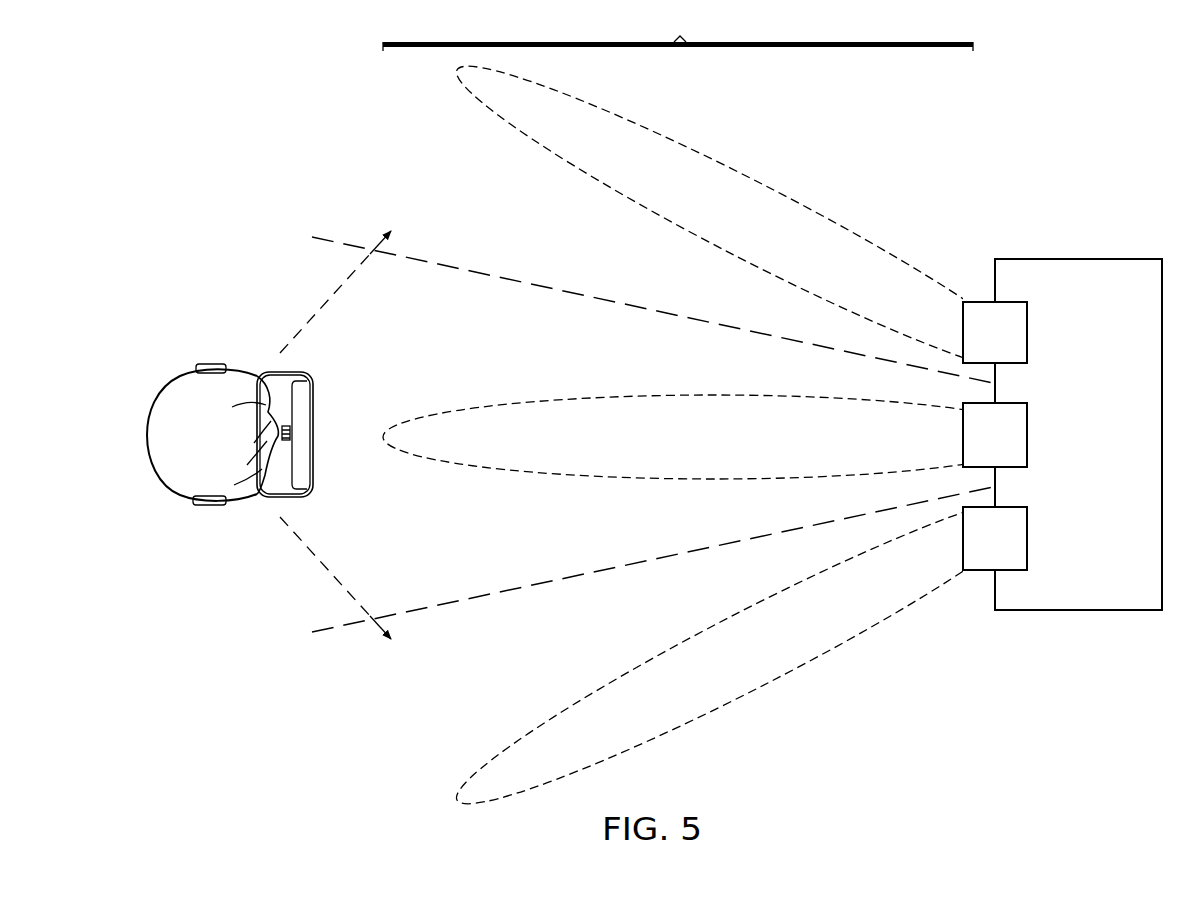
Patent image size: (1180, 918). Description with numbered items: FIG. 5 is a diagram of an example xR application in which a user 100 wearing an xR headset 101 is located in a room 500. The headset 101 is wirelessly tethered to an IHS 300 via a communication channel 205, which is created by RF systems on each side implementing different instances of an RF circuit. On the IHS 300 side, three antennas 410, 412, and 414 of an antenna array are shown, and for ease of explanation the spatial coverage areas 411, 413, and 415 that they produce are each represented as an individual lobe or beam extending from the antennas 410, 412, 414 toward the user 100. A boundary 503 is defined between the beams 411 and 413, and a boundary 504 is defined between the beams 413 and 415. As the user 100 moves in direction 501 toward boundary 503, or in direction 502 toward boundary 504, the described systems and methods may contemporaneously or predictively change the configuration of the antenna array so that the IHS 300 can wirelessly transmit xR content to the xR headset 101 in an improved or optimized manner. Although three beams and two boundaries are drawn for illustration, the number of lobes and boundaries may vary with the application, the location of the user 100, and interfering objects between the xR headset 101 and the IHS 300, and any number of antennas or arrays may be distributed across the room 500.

The room 500 is at (199, 110).
The communication channel 205 is at (678, 28).
The user 100 is at (150, 436).
The xR headset 101 is at (294, 436).
The IHS 300 is at (1072, 464).
The antenna 414 is at (975, 346).
The antenna 412 is at (975, 448).
The antenna 410 is at (975, 552).
The spatial coverage area 415 is at (720, 226).
The spatial coverage area 413 is at (685, 449).
The spatial coverage area 411 is at (720, 669).
The boundary 504 is at (652, 310).
The boundary 503 is at (655, 560).
The direction 502 is at (322, 308).
The direction 501 is at (320, 562).